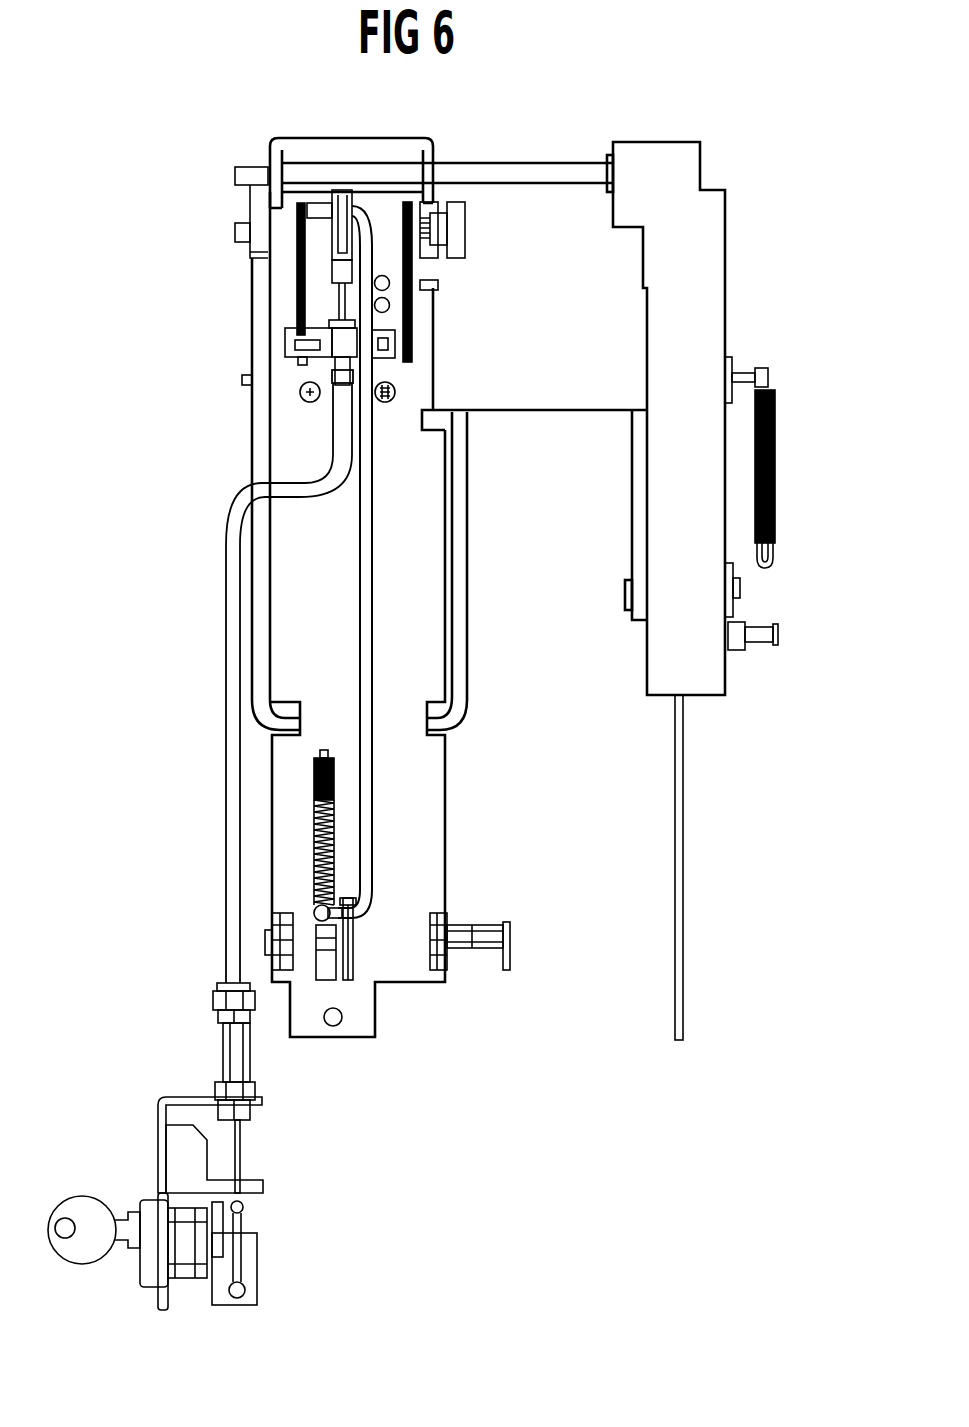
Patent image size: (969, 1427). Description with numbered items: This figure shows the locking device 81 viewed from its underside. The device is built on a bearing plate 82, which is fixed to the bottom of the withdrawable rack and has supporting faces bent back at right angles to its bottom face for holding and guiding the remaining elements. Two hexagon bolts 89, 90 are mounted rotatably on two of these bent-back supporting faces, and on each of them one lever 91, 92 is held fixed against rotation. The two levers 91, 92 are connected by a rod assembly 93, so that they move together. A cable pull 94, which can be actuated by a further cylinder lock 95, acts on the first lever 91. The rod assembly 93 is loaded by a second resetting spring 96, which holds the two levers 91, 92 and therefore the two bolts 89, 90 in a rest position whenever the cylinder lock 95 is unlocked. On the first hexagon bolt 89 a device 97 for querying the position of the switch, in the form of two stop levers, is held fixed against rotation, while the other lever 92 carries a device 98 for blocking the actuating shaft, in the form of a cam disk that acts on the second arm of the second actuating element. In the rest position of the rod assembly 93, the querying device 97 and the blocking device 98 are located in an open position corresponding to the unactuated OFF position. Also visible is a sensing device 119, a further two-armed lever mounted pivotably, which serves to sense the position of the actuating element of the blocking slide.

The locking device 81 is at (505, 1016).
The bearing plate 82 is at (442, 800).
The hexagon bolt 89 is at (452, 228).
The hexagon bolt 90 is at (462, 948).
The lever 91 is at (340, 230).
The lever 92 is at (352, 937).
The rod assembly 93 is at (372, 547).
The cable pull 94 is at (233, 578).
The cylinder lock 95 is at (110, 1266).
The second resetting spring 96 is at (335, 827).
The device for querying the position of the switch 97 is at (300, 300).
The device for blocking the actuating shaft 98 is at (510, 940).
The sensing device 119 is at (683, 858).